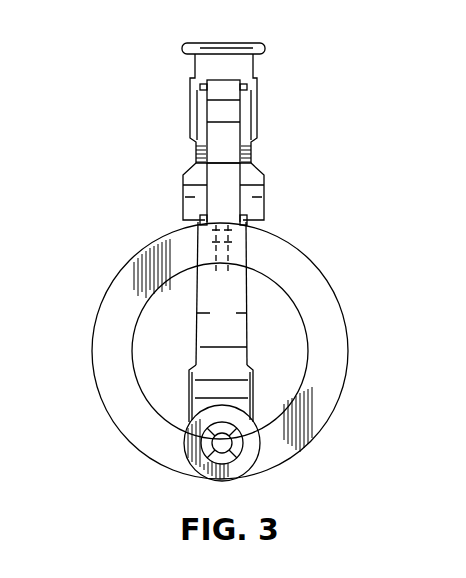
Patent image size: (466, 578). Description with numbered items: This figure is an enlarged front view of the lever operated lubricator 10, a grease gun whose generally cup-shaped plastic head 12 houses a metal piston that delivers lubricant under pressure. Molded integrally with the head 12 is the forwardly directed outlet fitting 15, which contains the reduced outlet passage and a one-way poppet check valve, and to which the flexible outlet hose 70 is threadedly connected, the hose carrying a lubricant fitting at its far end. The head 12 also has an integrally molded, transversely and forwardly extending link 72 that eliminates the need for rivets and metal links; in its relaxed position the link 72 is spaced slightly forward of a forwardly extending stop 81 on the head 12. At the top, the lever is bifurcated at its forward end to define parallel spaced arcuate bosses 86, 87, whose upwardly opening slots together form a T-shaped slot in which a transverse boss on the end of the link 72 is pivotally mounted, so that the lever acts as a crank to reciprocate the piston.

The lever operated lubricator 10 is at (302, 214).
The head 12 is at (330, 320).
The outlet fitting 15 is at (185, 455).
The flexible outlet hose 70 is at (242, 458).
The link 72 is at (206, 333).
The stop 81 is at (200, 226).
The arcuate boss 86 is at (200, 118).
The arcuate boss 87 is at (246, 117).